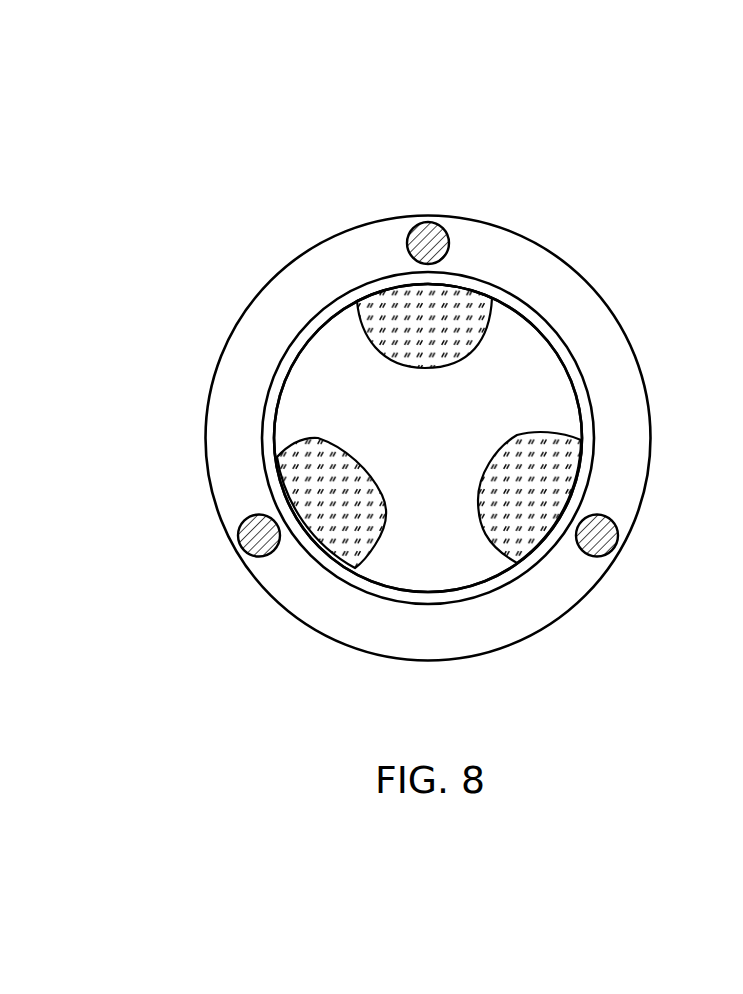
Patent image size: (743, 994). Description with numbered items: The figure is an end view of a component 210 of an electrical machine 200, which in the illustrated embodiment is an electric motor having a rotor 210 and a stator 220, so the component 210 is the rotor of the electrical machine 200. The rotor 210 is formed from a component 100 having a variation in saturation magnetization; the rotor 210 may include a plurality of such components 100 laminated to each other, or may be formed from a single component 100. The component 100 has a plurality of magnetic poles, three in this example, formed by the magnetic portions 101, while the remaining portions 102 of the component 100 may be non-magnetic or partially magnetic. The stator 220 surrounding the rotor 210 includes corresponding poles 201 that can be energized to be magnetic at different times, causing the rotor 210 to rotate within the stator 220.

The electrical machine 200 is at (593, 121).
The stator 220 is at (288, 263).
The poles 201 is at (247, 530).
The component 100 is at (442, 393).
The rotor 210 is at (525, 342).
The magnetic portions 101 is at (465, 300).
The remaining portions 102 is at (542, 378).